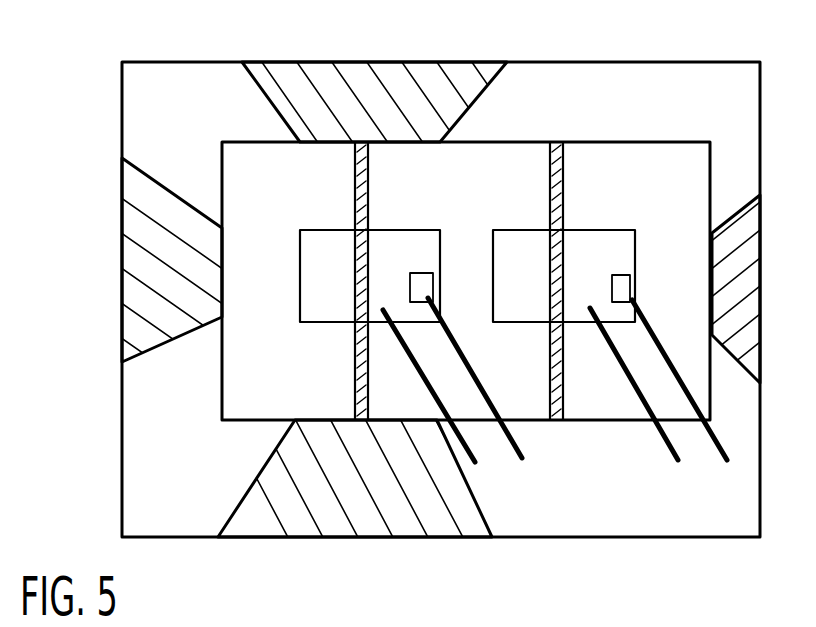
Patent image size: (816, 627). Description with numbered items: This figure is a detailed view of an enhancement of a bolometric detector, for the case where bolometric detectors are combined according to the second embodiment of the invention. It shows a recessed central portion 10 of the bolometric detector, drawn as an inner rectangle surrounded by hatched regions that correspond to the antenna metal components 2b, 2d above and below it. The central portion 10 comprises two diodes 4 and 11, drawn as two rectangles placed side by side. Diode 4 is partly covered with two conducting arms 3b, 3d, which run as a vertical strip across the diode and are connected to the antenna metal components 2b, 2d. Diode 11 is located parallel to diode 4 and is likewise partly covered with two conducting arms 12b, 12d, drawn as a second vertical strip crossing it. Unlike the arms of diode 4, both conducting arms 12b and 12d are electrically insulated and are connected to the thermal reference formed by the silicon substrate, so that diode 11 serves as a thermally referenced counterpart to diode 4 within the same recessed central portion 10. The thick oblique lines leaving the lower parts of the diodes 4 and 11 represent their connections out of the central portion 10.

The antenna metal component 2b is at (322, 30).
The antenna metal component 2d is at (356, 520).
The conducting arm 3b is at (355, 167).
The conducting arm 3d is at (360, 381).
The diode 4 is at (300, 278).
The recessed central portion 10 is at (230, 362).
The diode 11 is at (618, 232).
The conducting arm 12b is at (565, 160).
The conducting arm 12d is at (552, 396).